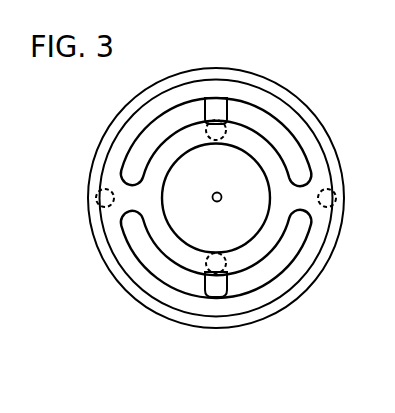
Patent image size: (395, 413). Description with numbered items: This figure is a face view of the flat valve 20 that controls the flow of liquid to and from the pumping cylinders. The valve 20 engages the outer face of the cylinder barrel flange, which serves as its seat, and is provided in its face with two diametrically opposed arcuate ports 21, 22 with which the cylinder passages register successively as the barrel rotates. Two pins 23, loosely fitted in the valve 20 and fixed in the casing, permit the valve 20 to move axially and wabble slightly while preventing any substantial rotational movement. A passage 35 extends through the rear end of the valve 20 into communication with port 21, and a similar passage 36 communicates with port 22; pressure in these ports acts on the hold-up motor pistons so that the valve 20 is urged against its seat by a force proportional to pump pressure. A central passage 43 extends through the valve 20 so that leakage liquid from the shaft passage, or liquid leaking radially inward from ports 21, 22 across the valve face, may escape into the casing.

The flat valve 20 is at (117, 268).
The arcuate port 21 is at (143, 152).
The arcuate port 22 is at (176, 275).
The pins 23 is at (97, 193).
The passage 35 is at (218, 112).
The passage 36 is at (222, 280).
The passage 43 is at (219, 193).